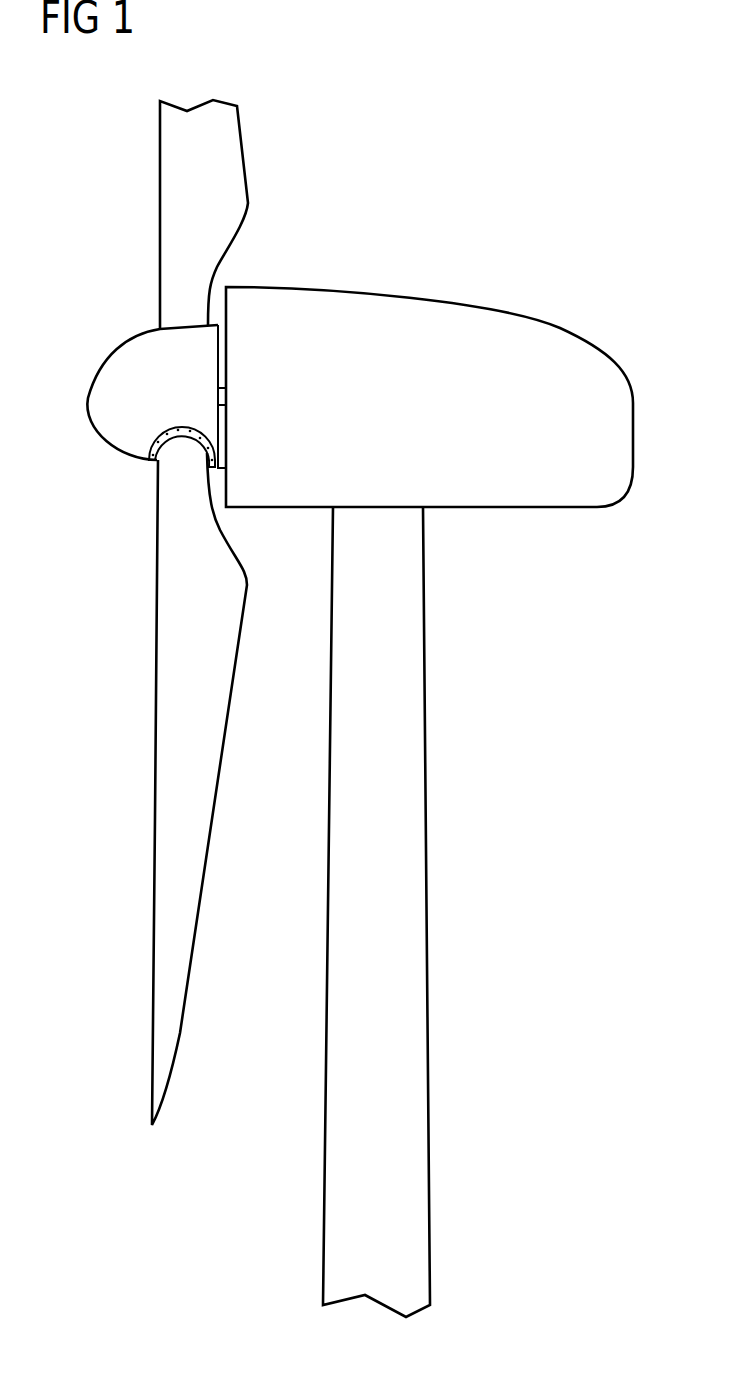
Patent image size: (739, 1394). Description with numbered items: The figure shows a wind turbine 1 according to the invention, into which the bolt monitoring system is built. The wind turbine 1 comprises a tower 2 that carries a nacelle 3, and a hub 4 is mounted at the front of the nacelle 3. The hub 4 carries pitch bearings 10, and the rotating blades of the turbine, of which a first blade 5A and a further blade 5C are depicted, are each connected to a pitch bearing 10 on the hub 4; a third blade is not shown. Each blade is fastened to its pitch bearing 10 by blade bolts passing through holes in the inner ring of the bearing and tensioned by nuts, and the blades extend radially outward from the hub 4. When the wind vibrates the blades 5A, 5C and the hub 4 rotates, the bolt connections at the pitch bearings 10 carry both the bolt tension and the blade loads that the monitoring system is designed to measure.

The wind turbine 1 is at (558, 762).
The tower 2 is at (417, 1033).
The nacelle 3 is at (509, 495).
The hub 4 is at (88, 392).
The rotating blade 5A is at (168, 497).
The rotating blade 5C is at (237, 172).
The pitch bearing 10 is at (177, 423).